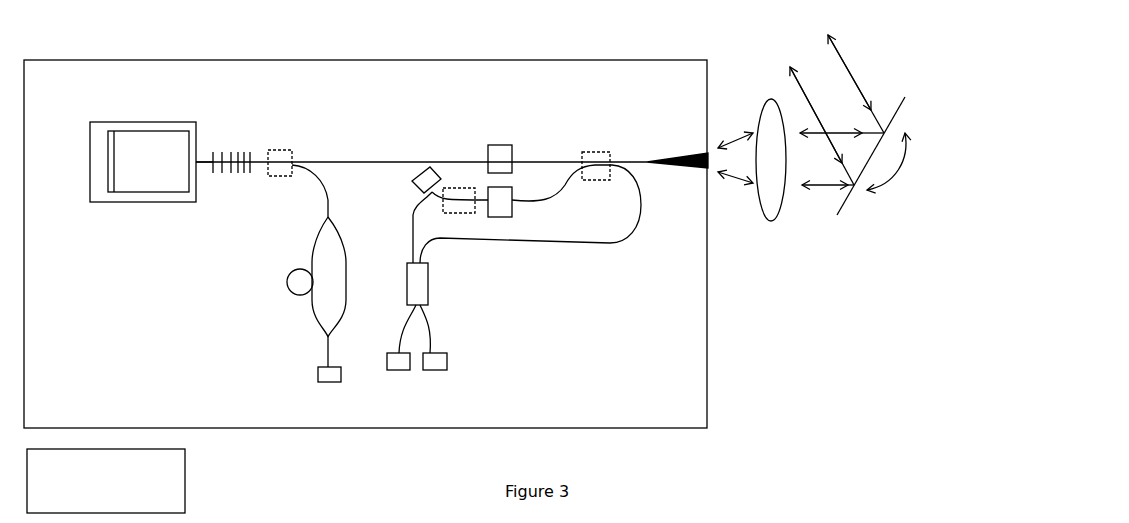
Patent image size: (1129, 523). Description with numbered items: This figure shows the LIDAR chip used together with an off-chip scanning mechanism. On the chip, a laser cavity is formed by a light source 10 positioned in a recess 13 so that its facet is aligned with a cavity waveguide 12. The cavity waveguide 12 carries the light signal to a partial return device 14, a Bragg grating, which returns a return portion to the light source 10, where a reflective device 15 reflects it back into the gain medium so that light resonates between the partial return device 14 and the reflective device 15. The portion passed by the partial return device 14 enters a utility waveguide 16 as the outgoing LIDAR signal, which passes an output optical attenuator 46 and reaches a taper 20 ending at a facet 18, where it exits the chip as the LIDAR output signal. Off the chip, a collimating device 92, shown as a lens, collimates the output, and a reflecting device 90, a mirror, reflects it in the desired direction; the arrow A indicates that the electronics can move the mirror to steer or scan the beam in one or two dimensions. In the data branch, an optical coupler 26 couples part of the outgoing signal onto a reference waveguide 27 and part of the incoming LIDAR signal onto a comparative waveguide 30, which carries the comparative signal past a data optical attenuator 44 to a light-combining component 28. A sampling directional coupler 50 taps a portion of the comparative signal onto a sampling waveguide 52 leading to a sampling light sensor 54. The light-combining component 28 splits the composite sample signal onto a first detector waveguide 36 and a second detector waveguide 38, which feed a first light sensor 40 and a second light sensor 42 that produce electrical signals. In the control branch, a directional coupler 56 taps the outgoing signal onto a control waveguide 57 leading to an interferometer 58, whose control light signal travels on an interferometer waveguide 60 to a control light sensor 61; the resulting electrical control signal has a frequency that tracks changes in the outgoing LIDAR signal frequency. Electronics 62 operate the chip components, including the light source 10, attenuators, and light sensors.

The light source 10 is at (138, 192).
The cavity waveguide 12 is at (198, 160).
The recess 13 is at (142, 122).
The partial return device 14 is at (233, 178).
The reflective device 15 is at (108, 160).
The utility waveguide 16 is at (330, 160).
The facet 18 is at (708, 157).
The taper 20 is at (684, 153).
The optical coupler 26 is at (607, 152).
The reference waveguide 27 is at (613, 246).
The light-combining component 28 is at (428, 273).
The comparative waveguide 30 is at (553, 204).
The first detector waveguide 36 is at (403, 330).
The second detector waveguide 38 is at (437, 338).
The first light sensor 40 is at (395, 370).
The second light sensor 42 is at (443, 370).
The data optical attenuator 44 is at (512, 200).
The output optical attenuator 46 is at (489, 146).
The sampling directional coupler 50 is at (452, 213).
The sampling waveguide 52 is at (427, 195).
The sampling light sensor 54 is at (412, 181).
The directional coupler 56 is at (278, 150).
The control waveguide 57 is at (320, 180).
The interferometer 58 is at (278, 283).
The interferometer waveguide 60 is at (328, 358).
The control light sensor 61 is at (318, 367).
The electronics 62 is at (185, 490).
The reflecting device 90 is at (842, 212).
The collimating device 92 is at (763, 108).
The arrow A is at (887, 185).